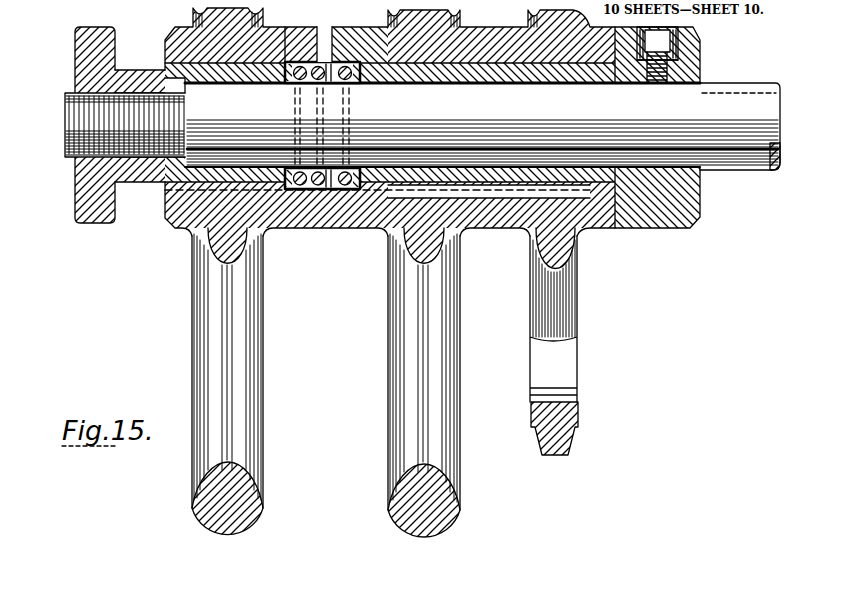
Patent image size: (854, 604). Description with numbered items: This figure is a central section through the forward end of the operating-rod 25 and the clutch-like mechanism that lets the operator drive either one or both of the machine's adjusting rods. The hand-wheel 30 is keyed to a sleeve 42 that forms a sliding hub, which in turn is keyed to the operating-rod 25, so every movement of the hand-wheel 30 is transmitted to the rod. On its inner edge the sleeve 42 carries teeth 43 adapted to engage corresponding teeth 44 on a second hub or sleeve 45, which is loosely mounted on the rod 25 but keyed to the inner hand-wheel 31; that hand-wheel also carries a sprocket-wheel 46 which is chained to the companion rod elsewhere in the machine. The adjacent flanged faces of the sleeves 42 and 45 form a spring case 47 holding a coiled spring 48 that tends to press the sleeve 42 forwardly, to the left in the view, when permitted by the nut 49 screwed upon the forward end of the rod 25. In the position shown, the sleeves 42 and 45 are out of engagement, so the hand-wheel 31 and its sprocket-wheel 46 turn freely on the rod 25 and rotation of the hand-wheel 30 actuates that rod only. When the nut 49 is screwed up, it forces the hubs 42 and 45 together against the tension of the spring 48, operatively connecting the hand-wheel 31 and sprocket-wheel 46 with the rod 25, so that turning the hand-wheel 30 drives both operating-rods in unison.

The operating-rod 25 is at (65, 118).
The hand-wheel 30 is at (192, 526).
The hand-wheel 31 is at (388, 522).
The sleeve 42 is at (278, 27).
The teeth 43 is at (320, 190).
The teeth 44 is at (331, 190).
The sleeve 45 is at (485, 243).
The sprocket-wheel 46 is at (537, 437).
The spring case 47 is at (302, 190).
The coiled spring 48 is at (323, 62).
The nut 49 is at (75, 36).